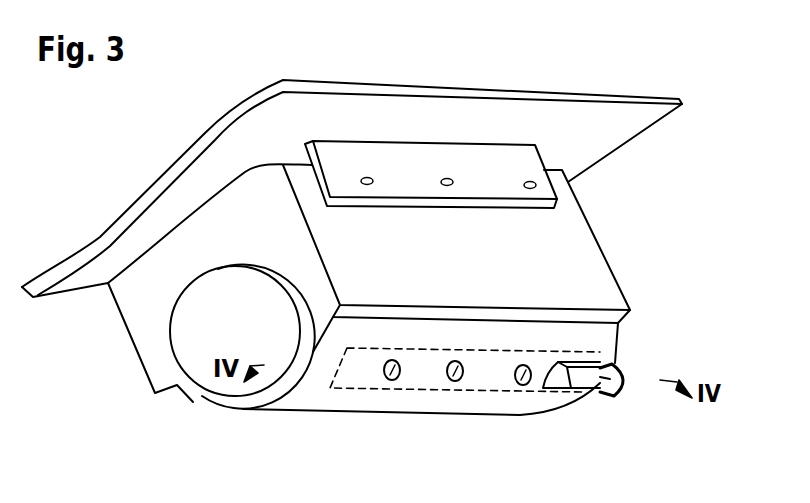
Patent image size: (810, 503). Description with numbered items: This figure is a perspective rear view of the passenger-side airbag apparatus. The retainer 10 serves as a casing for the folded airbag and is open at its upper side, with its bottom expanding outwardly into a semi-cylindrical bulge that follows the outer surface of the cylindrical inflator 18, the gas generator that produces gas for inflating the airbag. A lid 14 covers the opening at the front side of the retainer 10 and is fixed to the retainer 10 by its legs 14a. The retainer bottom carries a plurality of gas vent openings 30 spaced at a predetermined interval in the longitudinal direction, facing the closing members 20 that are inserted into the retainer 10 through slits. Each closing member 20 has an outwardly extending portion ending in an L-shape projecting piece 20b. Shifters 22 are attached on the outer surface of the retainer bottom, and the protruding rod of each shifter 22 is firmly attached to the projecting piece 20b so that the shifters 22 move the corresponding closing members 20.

The retainer 10 is at (592, 267).
The lid 14 is at (167, 163).
The legs 14a is at (488, 183).
The cylindrical inflator 18 is at (203, 305).
The closing members 20 is at (350, 390).
The L-shape projecting piece 20b is at (625, 370).
The shifters 22 is at (572, 390).
The gas vent openings 30 is at (393, 381).